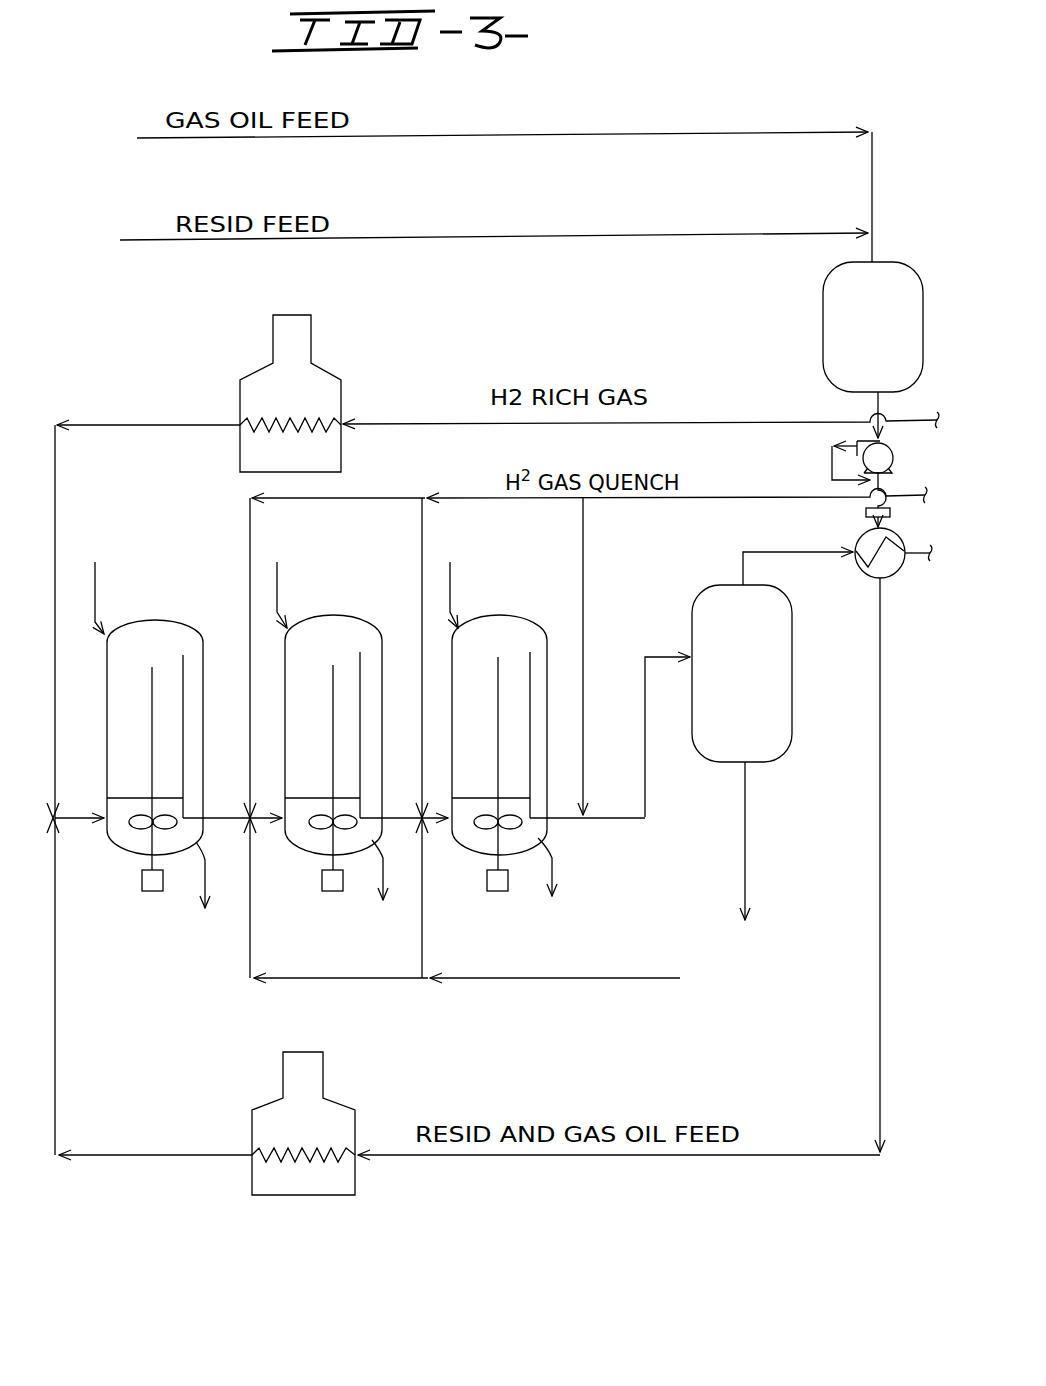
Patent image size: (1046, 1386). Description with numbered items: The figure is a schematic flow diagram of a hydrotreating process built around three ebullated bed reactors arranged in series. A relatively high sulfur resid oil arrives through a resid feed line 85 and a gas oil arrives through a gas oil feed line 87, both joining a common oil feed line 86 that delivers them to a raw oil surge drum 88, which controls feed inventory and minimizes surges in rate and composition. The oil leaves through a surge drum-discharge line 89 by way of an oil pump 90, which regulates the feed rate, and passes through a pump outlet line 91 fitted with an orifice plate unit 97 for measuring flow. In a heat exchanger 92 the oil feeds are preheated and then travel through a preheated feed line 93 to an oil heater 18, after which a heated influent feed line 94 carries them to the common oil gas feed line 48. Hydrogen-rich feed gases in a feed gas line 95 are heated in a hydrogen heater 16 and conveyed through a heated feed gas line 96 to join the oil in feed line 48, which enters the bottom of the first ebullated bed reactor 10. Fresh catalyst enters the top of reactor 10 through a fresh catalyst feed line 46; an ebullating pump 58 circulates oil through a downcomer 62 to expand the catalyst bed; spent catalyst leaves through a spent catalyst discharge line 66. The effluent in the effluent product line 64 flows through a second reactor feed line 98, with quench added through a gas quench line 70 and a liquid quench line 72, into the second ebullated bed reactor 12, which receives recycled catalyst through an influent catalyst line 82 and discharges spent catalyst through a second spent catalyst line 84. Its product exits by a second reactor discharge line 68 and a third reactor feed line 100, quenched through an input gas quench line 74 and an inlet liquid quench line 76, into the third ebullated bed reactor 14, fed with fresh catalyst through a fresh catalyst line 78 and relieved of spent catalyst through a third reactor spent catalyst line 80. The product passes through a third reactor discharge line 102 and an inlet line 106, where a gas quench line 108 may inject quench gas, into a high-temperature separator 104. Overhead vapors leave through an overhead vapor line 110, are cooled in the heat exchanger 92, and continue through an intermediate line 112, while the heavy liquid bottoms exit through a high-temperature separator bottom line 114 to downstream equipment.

The first ebullated bed reactor 10 is at (150, 623).
The second ebullated bed reactor 12 is at (336, 618).
The third ebullated bed reactor 14 is at (500, 618).
The hydrogen heater 16 is at (240, 378).
The oil heater 18 is at (252, 1110).
The fresh catalyst feed line 46 is at (97, 577).
The feed line 48 is at (62, 818).
The ebullating pump 58 is at (142, 886).
The downcomer 62 is at (150, 712).
The effluent product line 64 is at (215, 818).
The spent catalyst discharge line 66 is at (207, 873).
The second reactor discharge line 68 is at (393, 812).
The gas quench line 70 is at (250, 532).
The liquid quench line 72 is at (252, 912).
The input gas quench line 74 is at (422, 623).
The inlet liquid quench line 76 is at (424, 905).
The fresh catalyst line 78 is at (452, 577).
The third reactor spent catalyst line 80 is at (555, 875).
The influent catalyst line 82 is at (279, 583).
The second spent catalyst line 84 is at (386, 875).
The resid feed line 85 is at (500, 240).
The common oil feed line 86 is at (873, 246).
The gas oil feed line 87 is at (520, 134).
The raw oil surge drum 88 is at (823, 318).
The surge drum-discharge line 89 is at (875, 405).
The oil pump 90 is at (893, 452).
The pump outlet line 91 is at (832, 462).
The heat exchanger 92 is at (868, 576).
The preheated feed line 93 is at (882, 1082).
The heated influent feed line 94 is at (57, 1057).
The feed gas line 95 is at (375, 424).
The heated feed gas line 96 is at (57, 462).
The orifice plate unit 97 is at (866, 514).
The second reactor feed line 98 is at (253, 822).
The third reactor feed line 100 is at (425, 822).
The third reactor discharge line 102 is at (560, 820).
The high-temperature separator 104 is at (712, 585).
The inlet line 106 is at (647, 790).
The gas quench line 108 is at (585, 592).
The overhead vapor line 110 is at (801, 552).
The intermediate line 112 is at (907, 560).
The high-temperature separator bottom line 114 is at (746, 840).